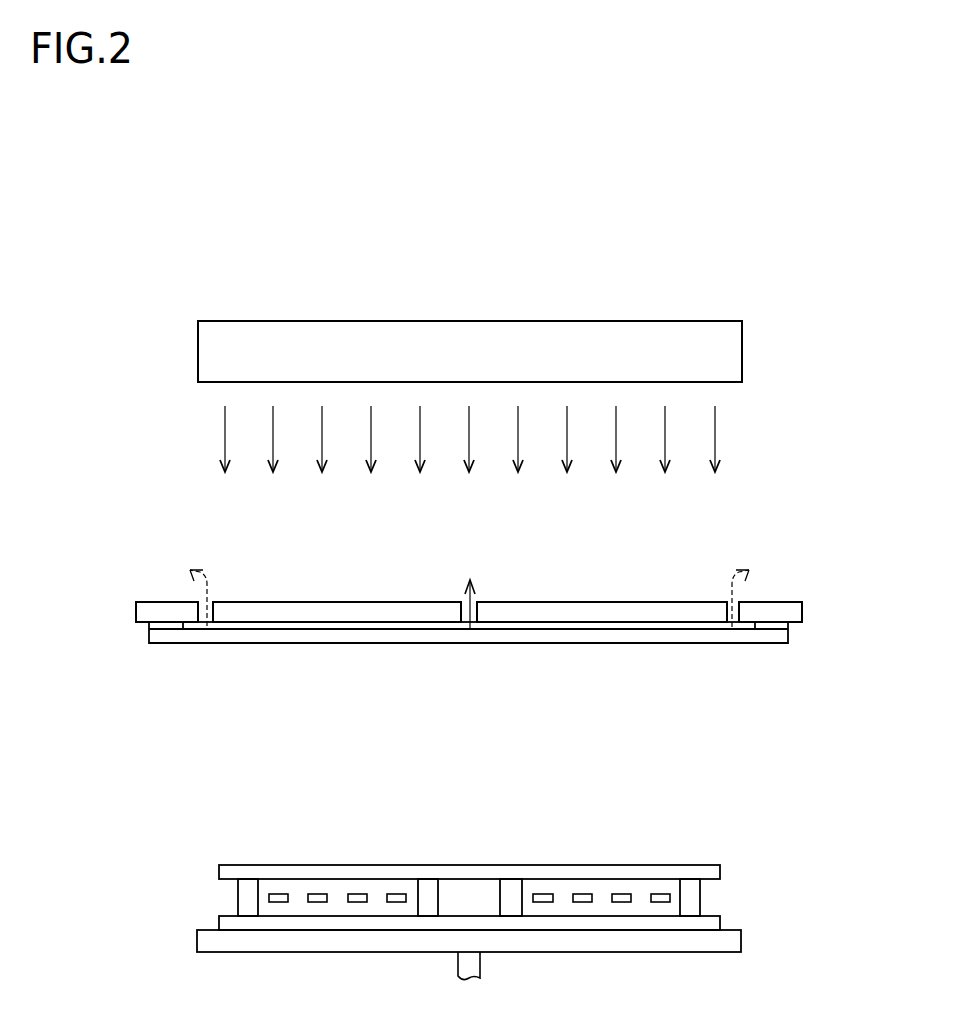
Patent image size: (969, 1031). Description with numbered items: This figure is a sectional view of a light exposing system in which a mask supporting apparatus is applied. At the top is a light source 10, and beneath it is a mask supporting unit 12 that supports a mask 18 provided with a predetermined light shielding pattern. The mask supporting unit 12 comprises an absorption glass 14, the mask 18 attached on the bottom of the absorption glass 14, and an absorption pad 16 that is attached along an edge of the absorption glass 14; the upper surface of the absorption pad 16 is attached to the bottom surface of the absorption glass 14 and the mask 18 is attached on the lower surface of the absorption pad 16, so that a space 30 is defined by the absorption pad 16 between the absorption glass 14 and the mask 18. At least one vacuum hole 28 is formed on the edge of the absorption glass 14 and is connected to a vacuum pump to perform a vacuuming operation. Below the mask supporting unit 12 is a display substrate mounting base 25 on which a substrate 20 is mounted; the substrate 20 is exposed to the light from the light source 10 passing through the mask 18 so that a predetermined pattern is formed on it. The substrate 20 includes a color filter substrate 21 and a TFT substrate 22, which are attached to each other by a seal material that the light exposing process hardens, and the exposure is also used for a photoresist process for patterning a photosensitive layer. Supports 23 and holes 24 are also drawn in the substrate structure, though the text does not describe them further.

The light source 10 is at (742, 351).
The mask supporting unit 12 is at (538, 642).
The absorption glass 14 is at (802, 607).
The absorption pad 16 is at (788, 628).
The mask 18 is at (788, 643).
The vacuum hole 28 is at (740, 598).
The space 30 is at (270, 628).
The substrate 20 is at (536, 891).
The color filter substrate 21 is at (722, 863).
The TFT substrate 22 is at (720, 920).
The support 23 is at (695, 896).
The holes 24 is at (622, 890).
The display substrate mounting base 25 is at (742, 942).